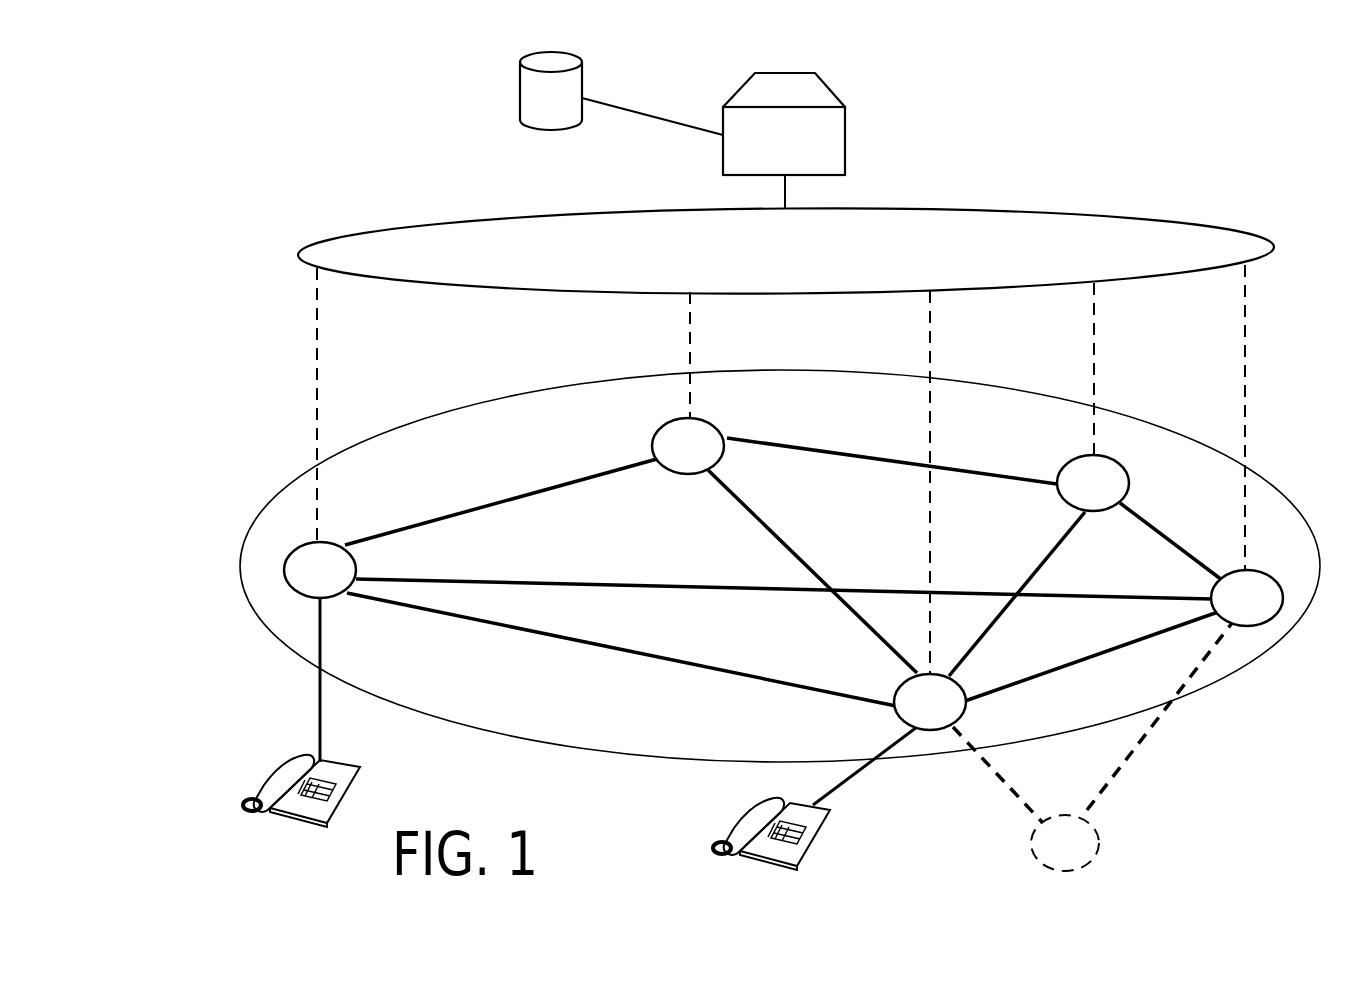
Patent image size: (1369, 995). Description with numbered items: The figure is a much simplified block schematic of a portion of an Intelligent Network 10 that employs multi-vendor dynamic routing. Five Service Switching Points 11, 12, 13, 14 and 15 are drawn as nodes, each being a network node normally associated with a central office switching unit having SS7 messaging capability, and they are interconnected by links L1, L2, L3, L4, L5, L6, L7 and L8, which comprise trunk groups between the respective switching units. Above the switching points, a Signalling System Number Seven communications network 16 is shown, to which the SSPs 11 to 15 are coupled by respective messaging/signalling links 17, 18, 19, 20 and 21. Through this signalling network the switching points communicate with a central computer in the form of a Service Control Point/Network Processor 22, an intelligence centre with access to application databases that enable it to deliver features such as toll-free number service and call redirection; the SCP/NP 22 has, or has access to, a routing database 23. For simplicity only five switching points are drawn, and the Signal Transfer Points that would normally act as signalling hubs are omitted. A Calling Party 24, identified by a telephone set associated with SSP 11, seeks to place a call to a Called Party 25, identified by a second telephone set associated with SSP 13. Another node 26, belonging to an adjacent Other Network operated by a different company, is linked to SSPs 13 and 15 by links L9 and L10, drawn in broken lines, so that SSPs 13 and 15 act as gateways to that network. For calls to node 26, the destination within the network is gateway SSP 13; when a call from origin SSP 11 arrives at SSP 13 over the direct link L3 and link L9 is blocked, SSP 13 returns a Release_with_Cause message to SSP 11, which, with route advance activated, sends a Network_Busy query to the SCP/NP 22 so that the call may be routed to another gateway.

The Intelligent Network 10 is at (1290, 498).
The Service Switching Point 11 is at (302, 592).
The Service Switching Point 12 is at (666, 425).
The Service Switching Point 13 is at (894, 690).
The Service Switching Point 14 is at (1112, 480).
The Service Switching Point 15 is at (1272, 578).
The SS7 communications network 16 is at (1005, 208).
The messaging/signalling link 17 is at (318, 383).
The messaging/signalling link 18 is at (690, 355).
The messaging/signalling link 19 is at (930, 374).
The messaging/signalling link 20 is at (1096, 380).
The messaging/signalling link 21 is at (1248, 385).
The Service Control Point/Network Processor 22 is at (845, 130).
The routing database 23 is at (520, 93).
The Calling Party 24 is at (281, 768).
The Called Party 25 is at (788, 866).
The node 26 is at (1096, 860).
The link L1 is at (498, 496).
The link L2 is at (527, 583).
The link L3 is at (621, 649).
The link L4 is at (815, 570).
The link L5 is at (887, 461).
The link L6 is at (1178, 540).
The link L7 is at (1032, 580).
The link L8 is at (1085, 666).
The link L9 is at (1010, 792).
The link L10 is at (1160, 740).